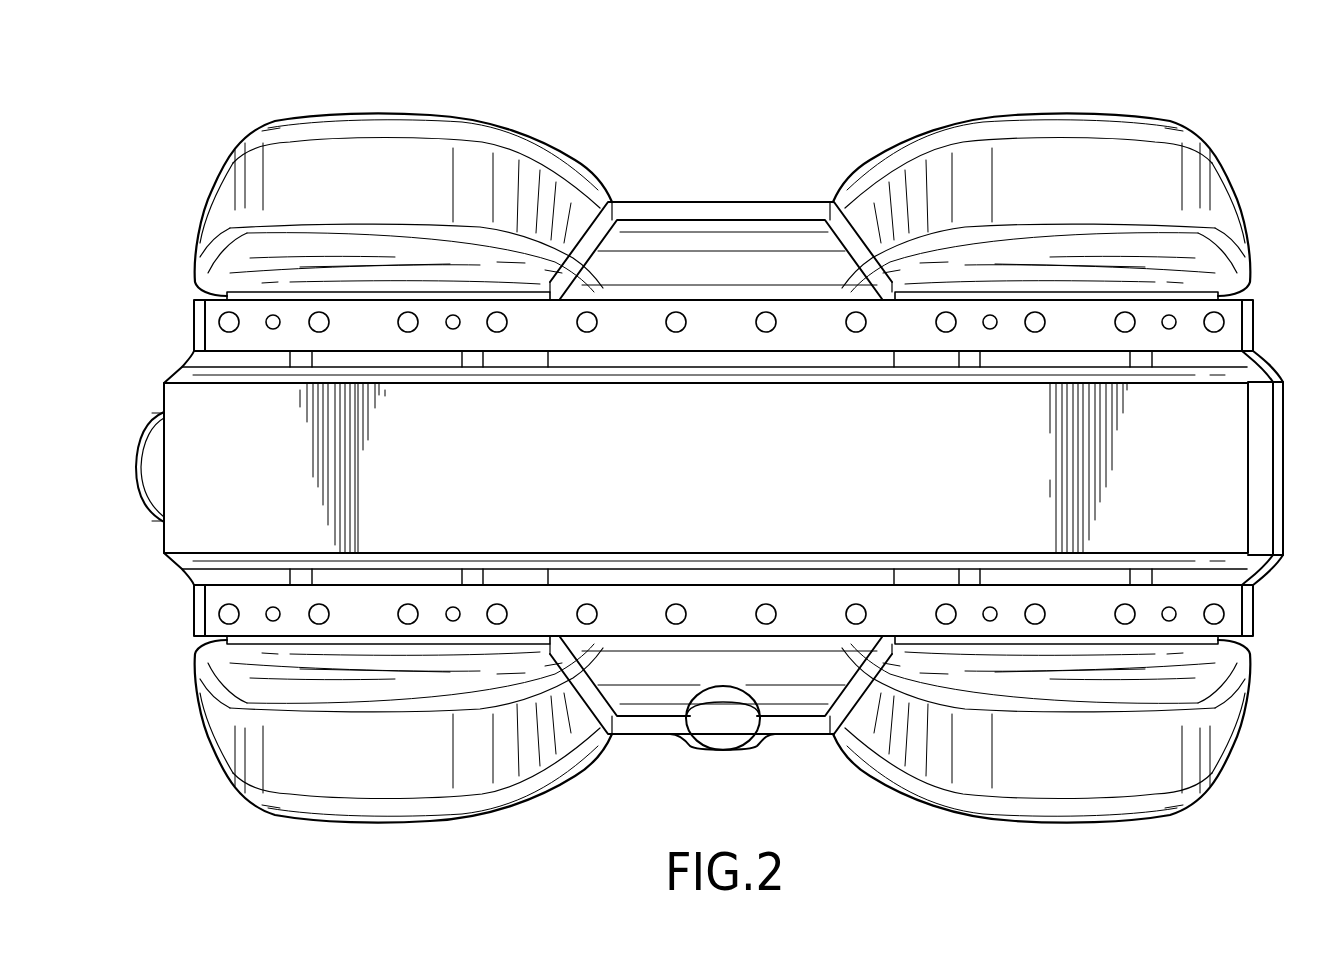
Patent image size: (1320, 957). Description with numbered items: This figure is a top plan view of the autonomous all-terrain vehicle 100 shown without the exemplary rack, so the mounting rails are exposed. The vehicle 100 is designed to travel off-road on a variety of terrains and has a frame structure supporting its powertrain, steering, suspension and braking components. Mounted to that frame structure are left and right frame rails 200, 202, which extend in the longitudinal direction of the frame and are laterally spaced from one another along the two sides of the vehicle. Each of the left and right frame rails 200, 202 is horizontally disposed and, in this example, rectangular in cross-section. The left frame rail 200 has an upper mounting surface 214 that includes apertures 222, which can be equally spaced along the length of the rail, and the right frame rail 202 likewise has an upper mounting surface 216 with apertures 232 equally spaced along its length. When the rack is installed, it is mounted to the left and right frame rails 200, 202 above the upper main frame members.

The autonomous all-terrain vehicle 100 is at (719, 428).
The left frame rail 200 is at (736, 584).
The right frame rail 202 is at (722, 338).
The upper mounting surface of left frame rail 214 is at (920, 592).
The upper mounting surface of right frame rail 216 is at (913, 328).
The apertures 222 is at (590, 603).
The apertures 232 is at (587, 332).